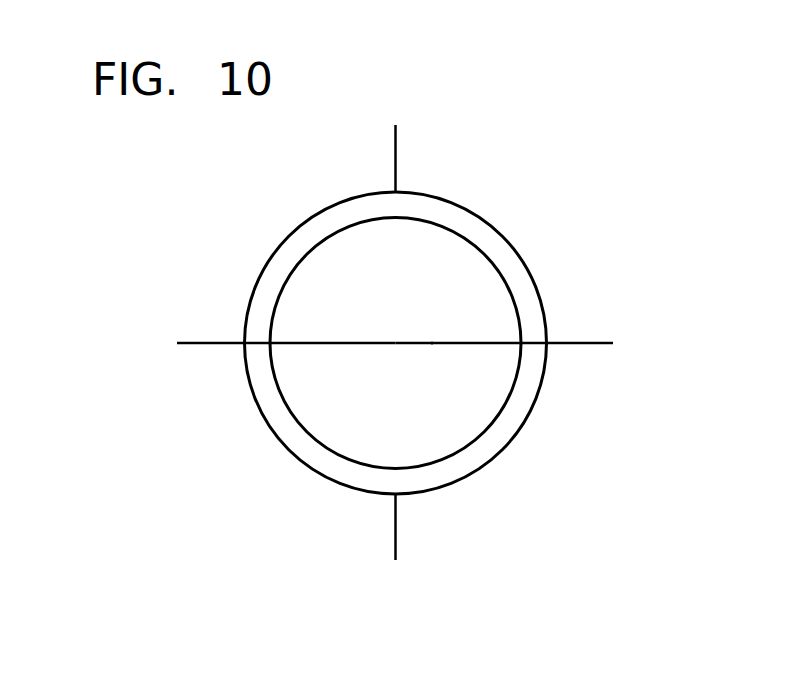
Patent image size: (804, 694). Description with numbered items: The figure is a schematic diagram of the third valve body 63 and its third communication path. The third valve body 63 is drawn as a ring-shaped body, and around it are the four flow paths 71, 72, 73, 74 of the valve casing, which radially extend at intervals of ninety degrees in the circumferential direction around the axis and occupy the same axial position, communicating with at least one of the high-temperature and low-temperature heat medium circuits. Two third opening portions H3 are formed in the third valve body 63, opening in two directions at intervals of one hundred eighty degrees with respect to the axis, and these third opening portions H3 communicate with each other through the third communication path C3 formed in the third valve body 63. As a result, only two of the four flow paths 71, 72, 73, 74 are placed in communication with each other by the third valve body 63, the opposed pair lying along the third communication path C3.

The third valve body 63 is at (427, 273).
The flow path 71 is at (396, 143).
The flow path 72 is at (396, 547).
The flow path 73 is at (595, 343).
The flow path 74 is at (188, 345).
The third opening portion H3 is at (270, 344).
The third communication path C3 is at (432, 345).